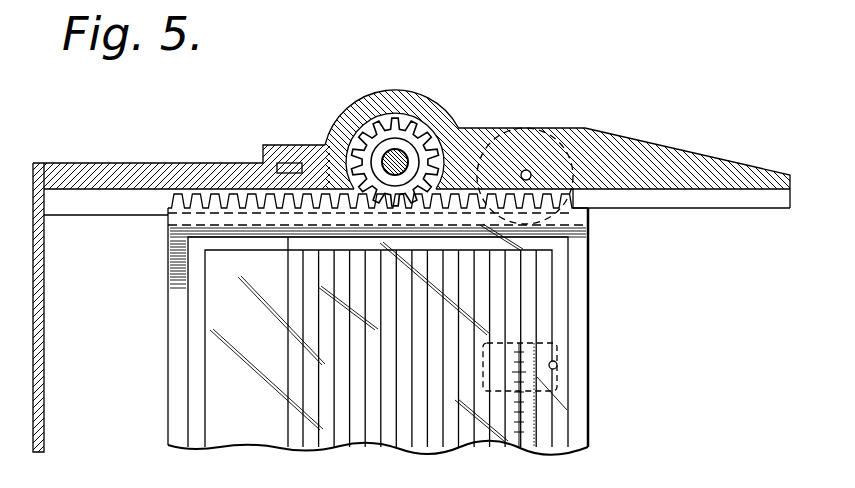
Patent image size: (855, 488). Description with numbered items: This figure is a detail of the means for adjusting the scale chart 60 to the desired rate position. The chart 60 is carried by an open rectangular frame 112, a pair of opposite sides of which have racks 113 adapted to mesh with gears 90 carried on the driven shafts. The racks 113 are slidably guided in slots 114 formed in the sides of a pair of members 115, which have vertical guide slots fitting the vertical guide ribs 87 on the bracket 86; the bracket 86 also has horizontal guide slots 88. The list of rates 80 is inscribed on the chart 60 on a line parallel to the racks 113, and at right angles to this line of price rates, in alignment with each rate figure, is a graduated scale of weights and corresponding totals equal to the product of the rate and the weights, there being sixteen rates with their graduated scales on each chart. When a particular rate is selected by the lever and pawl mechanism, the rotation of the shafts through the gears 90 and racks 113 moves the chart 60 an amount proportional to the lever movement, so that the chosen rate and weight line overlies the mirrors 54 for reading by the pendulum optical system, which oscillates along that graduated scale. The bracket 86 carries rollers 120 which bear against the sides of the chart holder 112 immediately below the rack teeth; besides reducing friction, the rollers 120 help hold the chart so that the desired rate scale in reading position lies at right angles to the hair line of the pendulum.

The mirrors 54 is at (557, 368).
The scale chart 60 is at (460, 407).
The rates 80 is at (497, 277).
The bracket 86 is at (463, 160).
The vertical guide ribs 87 is at (281, 172).
The horizontal guide slots 88 is at (657, 198).
The gears 90 is at (415, 138).
The open rectangular frame 112 is at (175, 368).
The racks 113 is at (191, 209).
The slots 114 is at (86, 208).
The members 115 is at (216, 178).
The rollers 120 is at (503, 148).